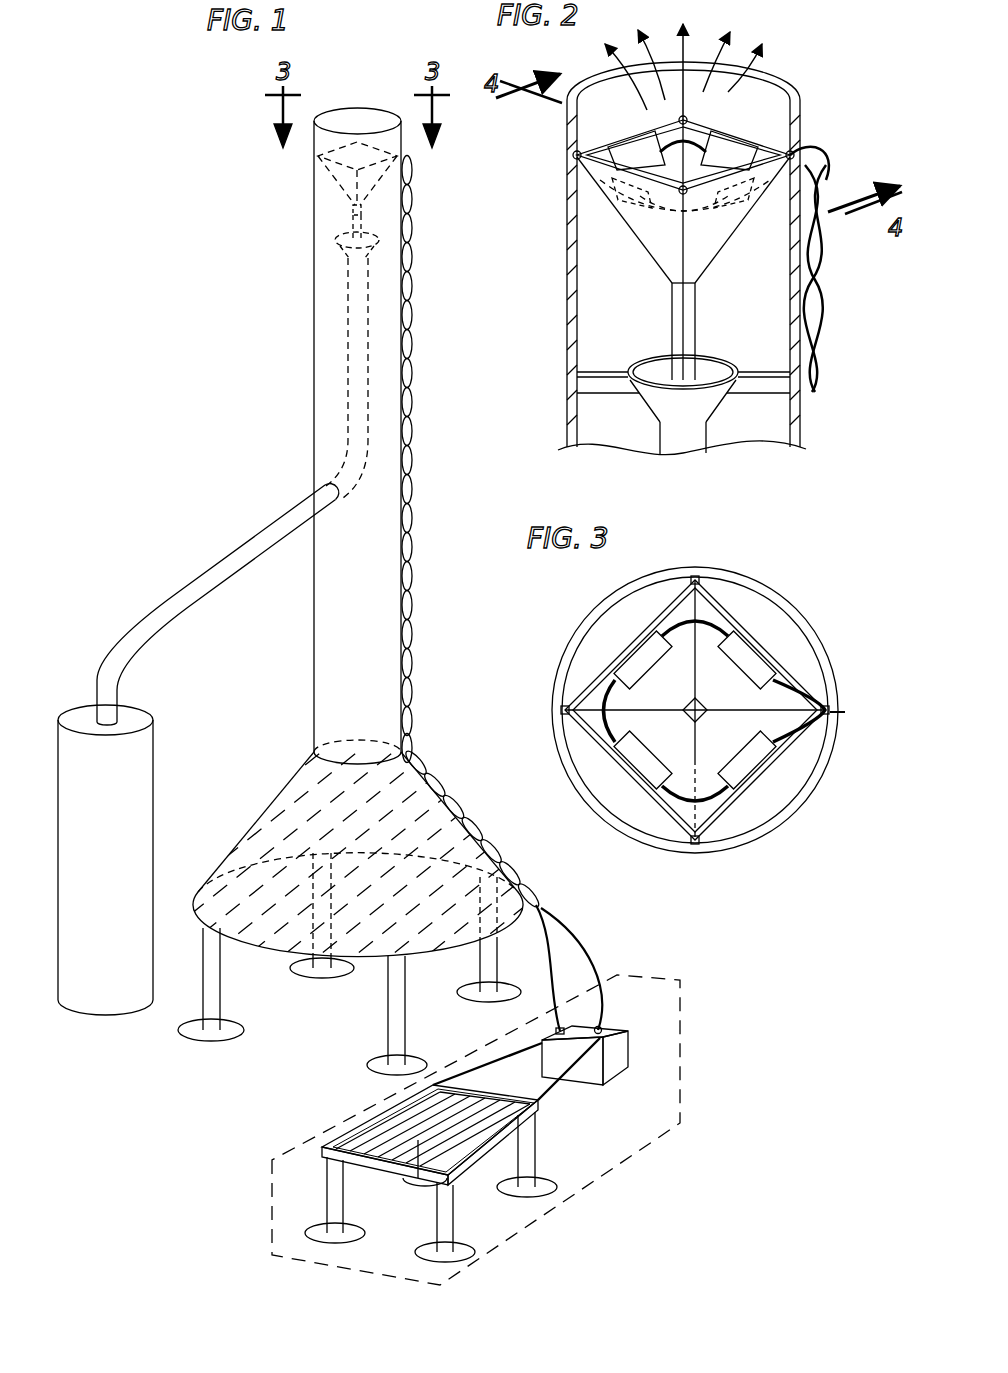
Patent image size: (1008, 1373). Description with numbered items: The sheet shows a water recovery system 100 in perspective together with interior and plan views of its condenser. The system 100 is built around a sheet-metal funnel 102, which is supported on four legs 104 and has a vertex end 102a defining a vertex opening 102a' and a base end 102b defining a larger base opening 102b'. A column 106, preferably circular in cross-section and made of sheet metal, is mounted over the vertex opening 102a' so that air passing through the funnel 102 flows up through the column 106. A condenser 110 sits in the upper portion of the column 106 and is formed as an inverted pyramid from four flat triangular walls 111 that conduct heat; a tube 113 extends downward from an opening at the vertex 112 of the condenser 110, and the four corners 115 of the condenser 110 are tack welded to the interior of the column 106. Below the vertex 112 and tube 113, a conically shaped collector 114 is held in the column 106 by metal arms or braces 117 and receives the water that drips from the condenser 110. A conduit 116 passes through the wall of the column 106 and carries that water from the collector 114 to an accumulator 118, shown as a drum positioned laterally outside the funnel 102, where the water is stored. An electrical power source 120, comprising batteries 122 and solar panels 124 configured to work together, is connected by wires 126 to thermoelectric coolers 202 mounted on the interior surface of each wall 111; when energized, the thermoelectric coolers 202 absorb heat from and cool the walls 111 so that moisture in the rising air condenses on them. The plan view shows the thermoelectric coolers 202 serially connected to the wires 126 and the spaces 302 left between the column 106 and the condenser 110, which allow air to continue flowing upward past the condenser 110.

In FIG. 1, the water recovery system 100 is at (203, 176).
In FIG. 1, the funnel 102 is at (272, 797).
In FIG. 1, the vertex end 102a is at (325, 732).
In FIG. 1, the vertex opening 102a' is at (359, 710).
In FIG. 1, the base end 102b is at (456, 998).
In FIG. 1, the base opening 102b' is at (305, 935).
In FIG. 1, the legs 104 is at (489, 970).
In FIG. 1, the column 106 is at (314, 386).
In FIG. 2, the column 106 is at (800, 419).
In FIG. 3, the column 106 is at (728, 573).
In FIG. 1, the condenser 110 is at (318, 173).
In FIG. 2, the condenser 110 is at (598, 201).
In FIG. 3, the condenser 110 is at (800, 683).
In FIG. 2, the walls 111 is at (712, 250).
In FIG. 1, the vertex 112 is at (352, 208).
In FIG. 2, the vertex 112 is at (682, 289).
In FIG. 1, the tube 113 is at (354, 225).
In FIG. 2, the tube 113 is at (693, 330).
In FIG. 1, the collector 114 is at (345, 244).
In FIG. 2, the collector 114 is at (655, 365).
In FIG. 2, the corners 115 is at (690, 118).
In FIG. 3, the corners 115 is at (695, 578).
In FIG. 1, the conduit 116 is at (175, 597).
In FIG. 2, the conduit 116 is at (665, 437).
In FIG. 2, the arms or braces 117 is at (587, 367).
In FIG. 1, the accumulator 118 is at (150, 747).
In FIG. 1, the electrical power source 120 is at (682, 1010).
In FIG. 1, the batteries 122 is at (622, 1070).
In FIG. 1, the solar panels 124 is at (540, 1100).
In FIG. 1, the wires 126 is at (410, 232).
In FIG. 2, the wires 126 is at (830, 312).
In FIG. 3, the wires 126 is at (842, 712).
In FIG. 2, the thermoelectric cooler 202 is at (638, 148).
In FIG. 3, the thermoelectric cooler 202 is at (748, 655).
In FIG. 3, the spaces 302 is at (628, 610).